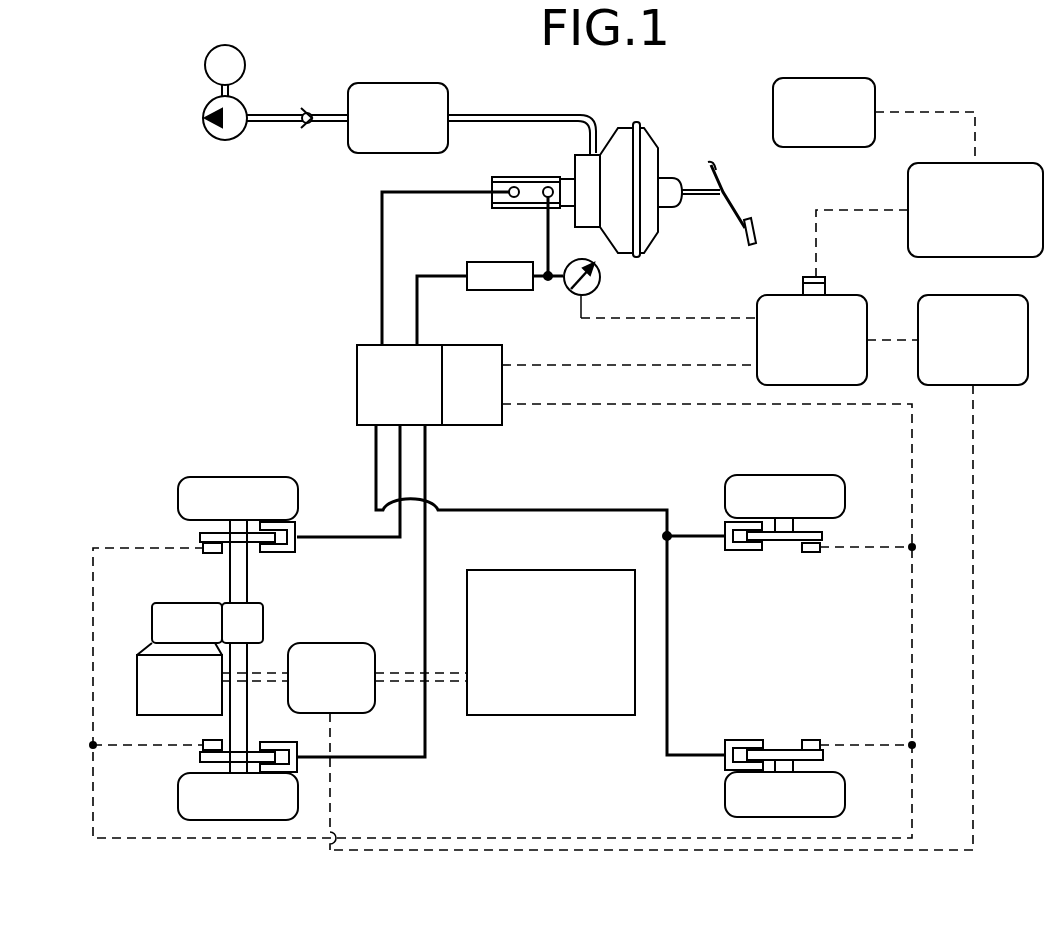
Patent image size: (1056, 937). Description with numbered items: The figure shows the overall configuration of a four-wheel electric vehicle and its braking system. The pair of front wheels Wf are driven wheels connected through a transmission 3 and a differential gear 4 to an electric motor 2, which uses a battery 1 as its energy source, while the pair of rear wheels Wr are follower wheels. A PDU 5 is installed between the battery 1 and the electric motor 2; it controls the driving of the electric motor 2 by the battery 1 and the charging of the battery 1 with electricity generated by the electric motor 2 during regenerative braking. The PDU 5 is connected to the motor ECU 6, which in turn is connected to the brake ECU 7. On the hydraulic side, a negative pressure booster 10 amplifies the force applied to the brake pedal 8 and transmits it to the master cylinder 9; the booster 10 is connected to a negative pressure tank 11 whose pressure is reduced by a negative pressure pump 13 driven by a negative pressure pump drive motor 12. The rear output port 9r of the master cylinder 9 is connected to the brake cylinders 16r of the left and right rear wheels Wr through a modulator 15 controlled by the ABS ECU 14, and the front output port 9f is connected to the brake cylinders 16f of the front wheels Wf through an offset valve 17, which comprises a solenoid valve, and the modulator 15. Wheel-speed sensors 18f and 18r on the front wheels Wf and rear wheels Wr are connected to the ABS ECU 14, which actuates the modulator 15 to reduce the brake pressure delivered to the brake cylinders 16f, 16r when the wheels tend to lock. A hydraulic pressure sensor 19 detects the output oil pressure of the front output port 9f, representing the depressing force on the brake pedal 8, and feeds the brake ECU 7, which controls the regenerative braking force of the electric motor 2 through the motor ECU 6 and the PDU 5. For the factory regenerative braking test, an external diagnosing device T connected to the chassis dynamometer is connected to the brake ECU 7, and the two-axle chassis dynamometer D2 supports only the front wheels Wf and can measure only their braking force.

The battery 1 is at (541, 657).
The electric motor 2 is at (138, 683).
The transmission 3 is at (160, 610).
The differential gear 4 is at (257, 608).
The PDU (power drive unit) 5 is at (322, 695).
The motor ECU 6 is at (964, 357).
The brake ECU 7 is at (803, 357).
The brake pedal 8 is at (753, 228).
The master cylinder 9 is at (528, 177).
The rear output port 9r is at (507, 178).
The front output port 9f is at (550, 177).
The negative pressure booster 10 is at (656, 136).
The negative pressure tank 11 is at (352, 150).
The negative pressure pump drive motor 12 is at (205, 63).
The negative pressure pump 13 is at (210, 135).
The ABS ECU 14 is at (457, 401).
The modulator 15 is at (385, 401).
The front wheel brake cylinder 16f is at (292, 548).
The rear wheel brake cylinder 16r is at (738, 550).
The offset valve 17 is at (493, 262).
The front wheel-speed sensor 18f is at (212, 553).
The rear wheel-speed sensor 18r is at (812, 553).
The hydraulic pressure sensor 19 is at (600, 277).
The external diagnosing device T is at (964, 228).
The two-axle chassis dynamometer D2 is at (843, 131).
The front wheel Wf is at (183, 492).
The rear wheel Wr is at (826, 480).